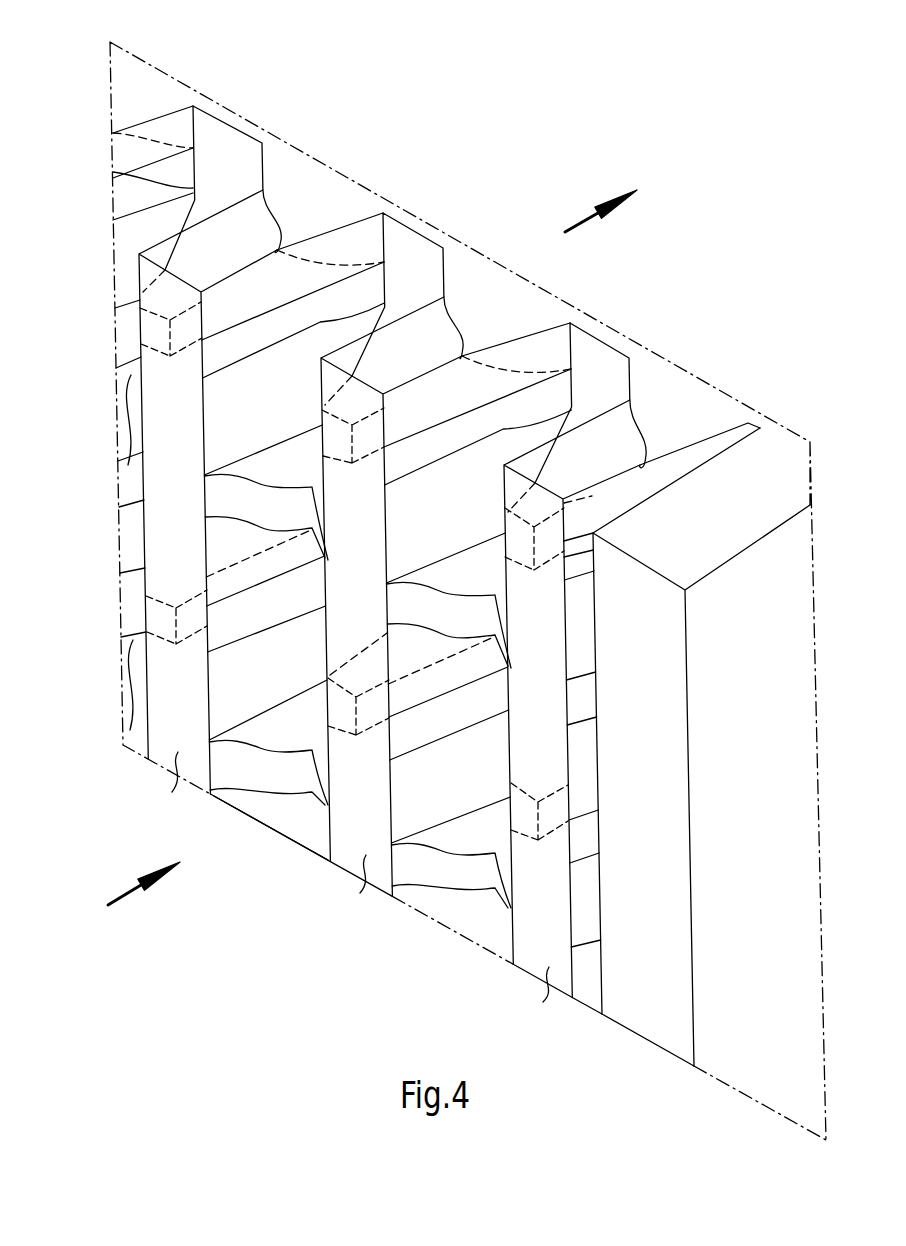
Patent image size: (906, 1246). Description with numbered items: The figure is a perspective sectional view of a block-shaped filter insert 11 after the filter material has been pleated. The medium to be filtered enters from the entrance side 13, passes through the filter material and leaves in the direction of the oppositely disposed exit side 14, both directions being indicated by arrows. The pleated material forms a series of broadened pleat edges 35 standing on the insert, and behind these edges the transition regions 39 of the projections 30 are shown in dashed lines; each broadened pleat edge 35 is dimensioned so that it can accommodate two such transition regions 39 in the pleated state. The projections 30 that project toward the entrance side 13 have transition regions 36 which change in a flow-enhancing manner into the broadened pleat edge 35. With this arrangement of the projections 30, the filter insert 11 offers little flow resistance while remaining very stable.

The filter insert 11 is at (238, 36).
The entrance side 13 is at (126, 907).
The exit side 14 is at (621, 196).
The projections 30 is at (260, 227).
The broadened pleat edges 35 is at (344, 887).
The transition regions 36 is at (278, 773).
The transition regions 39 is at (160, 318).